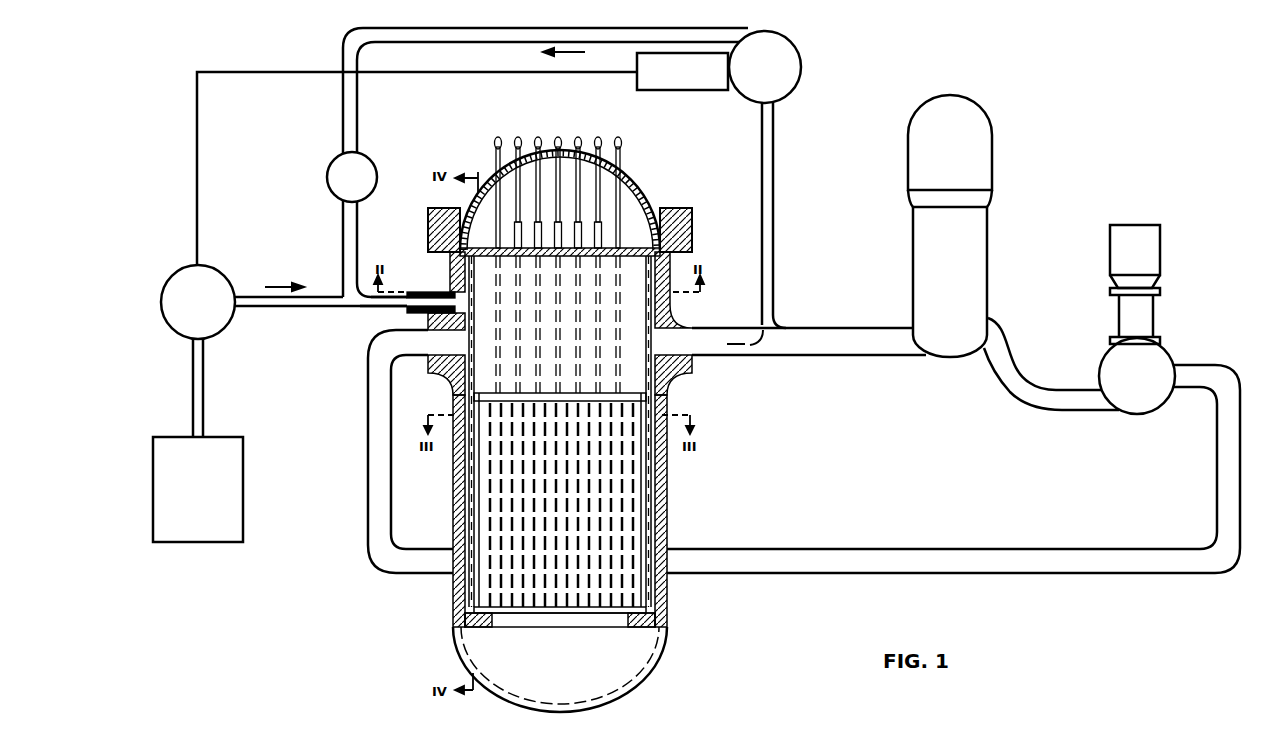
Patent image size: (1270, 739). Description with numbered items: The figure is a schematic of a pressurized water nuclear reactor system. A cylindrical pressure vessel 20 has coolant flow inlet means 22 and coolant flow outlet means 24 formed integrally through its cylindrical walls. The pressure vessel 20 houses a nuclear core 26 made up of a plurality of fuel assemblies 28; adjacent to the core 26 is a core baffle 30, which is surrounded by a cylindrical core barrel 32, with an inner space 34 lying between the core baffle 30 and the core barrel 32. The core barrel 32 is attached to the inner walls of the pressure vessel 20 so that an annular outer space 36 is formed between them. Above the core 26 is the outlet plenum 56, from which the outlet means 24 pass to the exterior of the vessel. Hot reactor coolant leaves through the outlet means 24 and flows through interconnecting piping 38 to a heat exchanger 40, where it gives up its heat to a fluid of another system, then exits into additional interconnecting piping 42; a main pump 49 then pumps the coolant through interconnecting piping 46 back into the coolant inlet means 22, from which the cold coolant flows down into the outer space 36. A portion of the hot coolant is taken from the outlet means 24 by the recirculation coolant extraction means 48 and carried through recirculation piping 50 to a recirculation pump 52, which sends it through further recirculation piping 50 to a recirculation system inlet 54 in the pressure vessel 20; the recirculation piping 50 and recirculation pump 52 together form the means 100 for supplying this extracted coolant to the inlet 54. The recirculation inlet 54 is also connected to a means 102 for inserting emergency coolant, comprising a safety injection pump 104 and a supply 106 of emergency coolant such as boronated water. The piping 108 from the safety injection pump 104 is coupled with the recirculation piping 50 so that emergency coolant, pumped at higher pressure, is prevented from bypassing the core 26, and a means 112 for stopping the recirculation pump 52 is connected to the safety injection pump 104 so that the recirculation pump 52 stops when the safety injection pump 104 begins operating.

The pressure vessel 20 is at (669, 481).
The coolant flow inlet means 22 is at (420, 345).
The coolant flow outlet means 24 is at (697, 330).
The nuclear core 26 is at (729, 407).
The fuel assemblies 28 is at (637, 500).
The core baffle 30 is at (668, 530).
The core barrel 32 is at (455, 492).
The inner space 34 is at (470, 589).
The annular outer space 36 is at (458, 604).
The interconnecting piping 38 is at (853, 343).
The heat exchanger 40 is at (990, 236).
The interconnecting piping 42 is at (1010, 358).
The interconnecting piping 46 is at (1055, 557).
The recirculation coolant extraction means 48 is at (748, 331).
The reactor coolant pump 49 is at (1173, 360).
The recirculation piping 50 is at (345, 97).
The recirculation pump 52 is at (798, 57).
The recirculation system inlet 54 is at (437, 293).
The outlet plenum 56 is at (570, 330).
The means for supplying 100 is at (329, 186).
The means for inserting an emergency coolant 102 is at (321, 321).
The safety injection pump 104 is at (227, 333).
The supply of emergency coolant 106 is at (218, 437).
The piping 108 is at (333, 307).
The means for stopping 112 is at (686, 90).